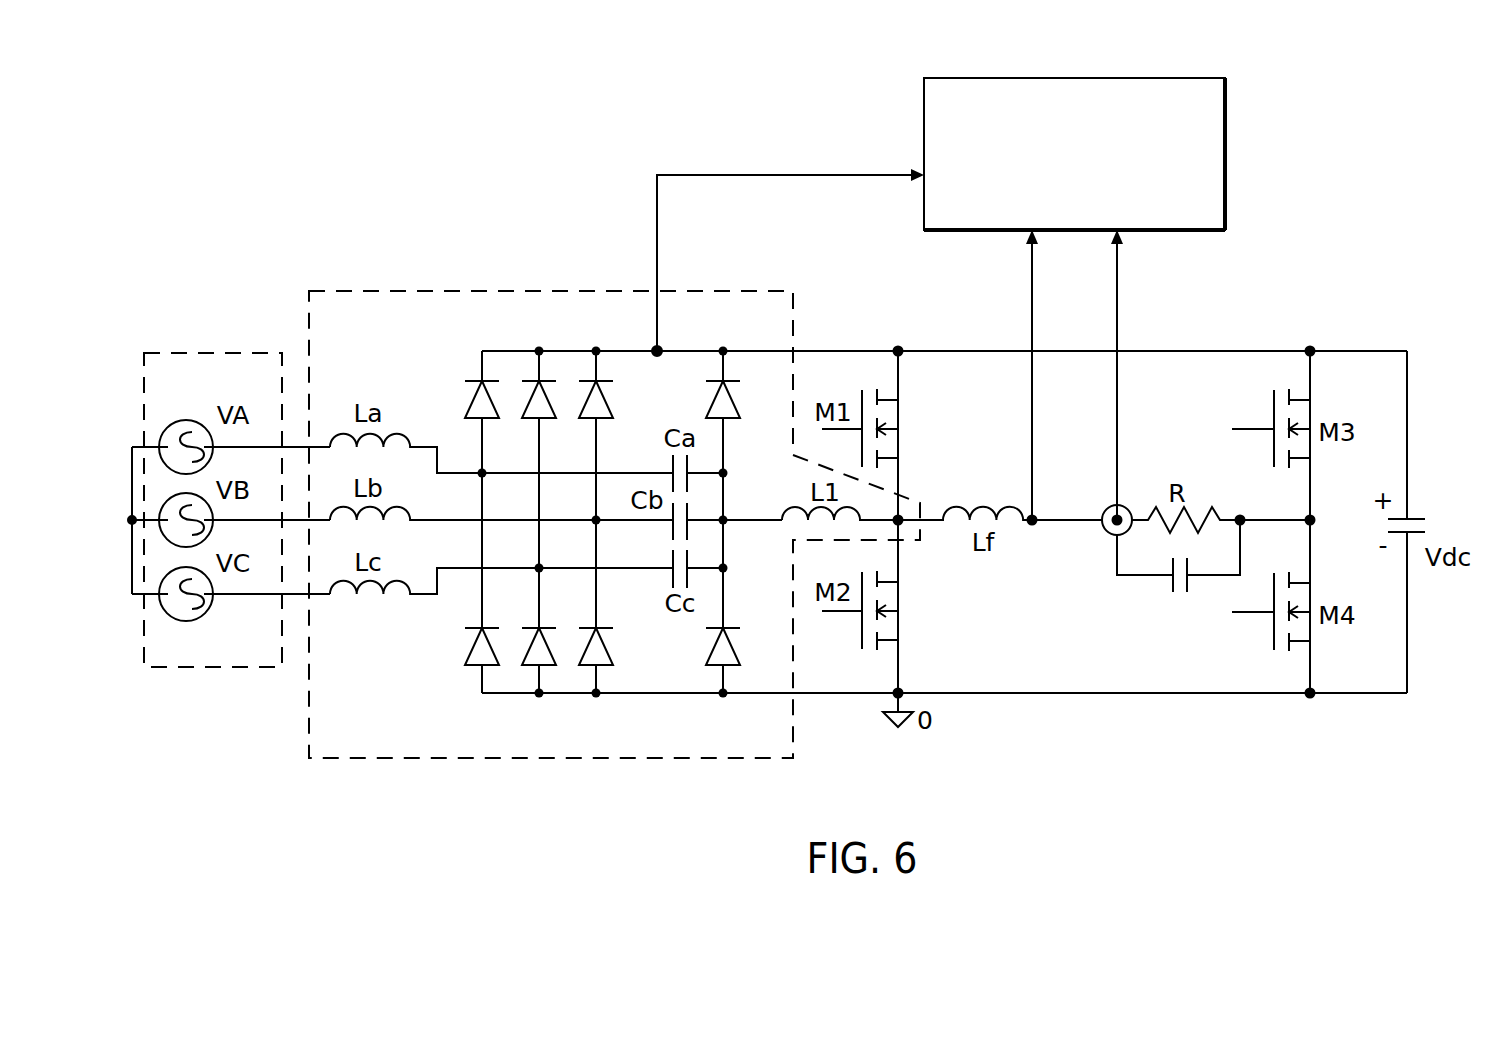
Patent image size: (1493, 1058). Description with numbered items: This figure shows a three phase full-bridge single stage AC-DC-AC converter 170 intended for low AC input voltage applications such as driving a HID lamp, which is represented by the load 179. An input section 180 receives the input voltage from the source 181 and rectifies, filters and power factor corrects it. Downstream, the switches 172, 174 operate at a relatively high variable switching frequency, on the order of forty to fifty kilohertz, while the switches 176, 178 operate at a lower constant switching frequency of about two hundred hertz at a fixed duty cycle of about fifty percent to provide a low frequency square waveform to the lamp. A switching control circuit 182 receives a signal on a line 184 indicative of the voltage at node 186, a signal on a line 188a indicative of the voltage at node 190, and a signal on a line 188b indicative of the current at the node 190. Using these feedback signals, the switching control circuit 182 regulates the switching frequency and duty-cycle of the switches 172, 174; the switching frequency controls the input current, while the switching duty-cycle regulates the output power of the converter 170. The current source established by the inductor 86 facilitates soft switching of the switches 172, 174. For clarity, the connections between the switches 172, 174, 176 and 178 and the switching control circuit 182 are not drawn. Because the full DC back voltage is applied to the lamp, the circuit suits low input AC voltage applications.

The three phase full-bridge single stage AC-DC-AC converter 170 is at (1328, 107).
The input section 180 is at (358, 290).
The source 181 is at (180, 353).
The switching control circuit 182 is at (1155, 77).
The line 184 is at (657, 226).
The node 186 is at (658, 350).
The line 188a is at (1032, 293).
The line 188b is at (1118, 292).
The switch 172 is at (895, 428).
The switch 174 is at (895, 610).
The switch 176 is at (1273, 412).
The switch 178 is at (1275, 630).
The load 179 is at (1195, 510).
The node 190 is at (1107, 533).
The inductor L1 86 is at (806, 510).